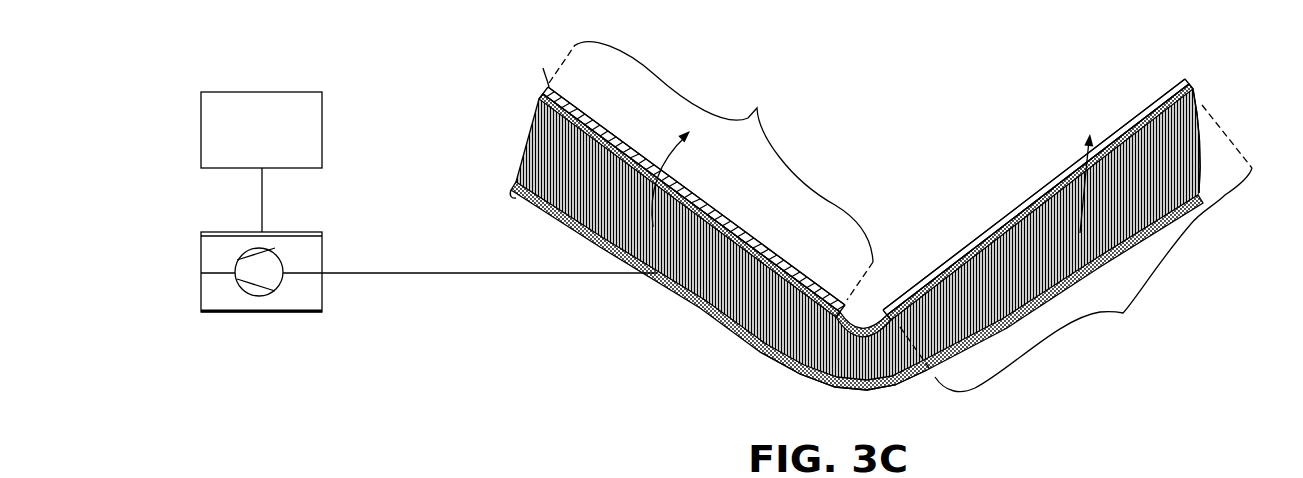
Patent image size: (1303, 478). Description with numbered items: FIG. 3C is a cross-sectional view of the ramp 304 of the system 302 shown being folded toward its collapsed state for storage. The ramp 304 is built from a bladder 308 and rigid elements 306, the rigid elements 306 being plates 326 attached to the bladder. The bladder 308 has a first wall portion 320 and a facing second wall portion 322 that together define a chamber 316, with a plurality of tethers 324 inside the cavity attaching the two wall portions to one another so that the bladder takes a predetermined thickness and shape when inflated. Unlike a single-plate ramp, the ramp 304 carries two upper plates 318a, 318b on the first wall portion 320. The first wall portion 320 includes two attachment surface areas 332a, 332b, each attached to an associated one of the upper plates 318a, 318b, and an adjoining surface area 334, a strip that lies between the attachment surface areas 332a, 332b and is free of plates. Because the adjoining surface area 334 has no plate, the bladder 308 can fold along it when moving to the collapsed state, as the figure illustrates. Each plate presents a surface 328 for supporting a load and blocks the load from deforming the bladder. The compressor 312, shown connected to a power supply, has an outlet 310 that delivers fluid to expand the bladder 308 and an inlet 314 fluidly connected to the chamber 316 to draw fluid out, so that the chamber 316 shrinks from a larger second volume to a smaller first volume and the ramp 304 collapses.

The system 302 is at (226, 58).
The ramp 304 is at (478, 147).
The rigid element 306 is at (587, 110).
The bladder 308 is at (1203, 200).
The outlet 310 is at (201, 276).
The compressor 312 is at (291, 232).
The inlet 314 is at (322, 272).
The chamber 316 is at (710, 302).
The upper plate 318a is at (696, 196).
The upper plate 318b is at (1034, 194).
The first wall portion 320 is at (799, 278).
The second wall portion 322 is at (790, 373).
The tethers 324 is at (1033, 213).
The plates 326 is at (866, 199).
The surface 328 is at (710, 207).
The attachment surface area 332a is at (757, 108).
The attachment surface area 332b is at (1123, 313).
The adjoining surface area 334 is at (862, 328).